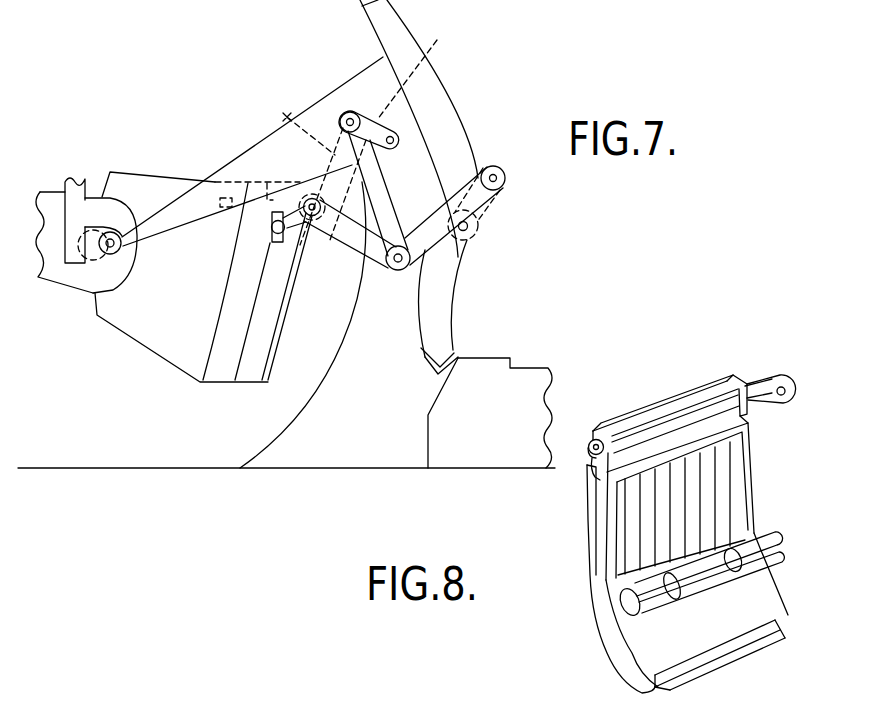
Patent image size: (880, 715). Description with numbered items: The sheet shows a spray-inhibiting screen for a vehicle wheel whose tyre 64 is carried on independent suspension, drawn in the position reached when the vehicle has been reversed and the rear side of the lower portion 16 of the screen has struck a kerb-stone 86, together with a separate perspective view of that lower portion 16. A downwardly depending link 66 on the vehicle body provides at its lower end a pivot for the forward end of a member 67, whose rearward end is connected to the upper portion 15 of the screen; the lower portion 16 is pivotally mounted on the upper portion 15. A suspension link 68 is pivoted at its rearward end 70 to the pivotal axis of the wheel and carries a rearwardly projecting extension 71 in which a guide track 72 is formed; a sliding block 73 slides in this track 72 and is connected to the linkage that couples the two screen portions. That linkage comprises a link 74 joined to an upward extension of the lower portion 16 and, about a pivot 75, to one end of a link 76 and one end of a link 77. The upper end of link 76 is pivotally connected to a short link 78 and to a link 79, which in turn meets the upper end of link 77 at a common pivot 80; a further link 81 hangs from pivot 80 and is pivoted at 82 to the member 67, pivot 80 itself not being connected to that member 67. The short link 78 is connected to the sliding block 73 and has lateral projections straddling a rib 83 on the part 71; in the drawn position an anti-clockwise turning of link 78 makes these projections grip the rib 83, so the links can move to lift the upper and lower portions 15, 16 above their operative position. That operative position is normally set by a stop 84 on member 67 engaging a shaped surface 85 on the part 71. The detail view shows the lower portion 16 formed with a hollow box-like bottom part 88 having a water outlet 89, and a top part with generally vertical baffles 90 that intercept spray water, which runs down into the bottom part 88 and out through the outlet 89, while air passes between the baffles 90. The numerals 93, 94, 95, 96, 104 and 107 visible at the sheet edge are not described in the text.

In FIG. 7, the upper portion of the screen 15 is at (372, 21).
In FIG. 7, the lower portion of the screen 16 is at (430, 340).
In FIG. 8, the lower portion of the screen 16 is at (582, 539).
In FIG. 7, the tyre 64 is at (312, 407).
In FIG. 7, the link 66 is at (77, 200).
In FIG. 7, the member 67 is at (158, 220).
In FIG. 7, the suspension link 68 is at (117, 272).
In FIG. 7, the rearward end of suspension link 70 is at (90, 252).
In FIG. 7, the rearwardly projecting extension 71 is at (163, 347).
In FIG. 7, the guide track 72 is at (253, 363).
In FIG. 7, the sliding block 73 is at (285, 238).
In FIG. 7, the link 74 is at (426, 240).
In FIG. 7, the pivot 75 is at (410, 260).
In FIG. 7, the link 76 is at (363, 247).
In FIG. 7, the link 77 is at (370, 182).
In FIG. 7, the short link 78 is at (292, 228).
In FIG. 7, the link 79 is at (285, 116).
In FIG. 7, the common pivot 80 is at (343, 114).
In FIG. 7, the link 81 is at (425, 66).
In FIG. 7, the pivot 82 is at (394, 140).
In FIG. 7, the laterally projecting rib 83 is at (276, 323).
In FIG. 7, the stop 84 is at (225, 203).
In FIG. 7, the laterally projecting surface 85 is at (212, 378).
In FIG. 7, the kerb-stone 86 is at (515, 398).
In FIG. 8, the bottom part 88 is at (612, 648).
In FIG. 8, the water outlet 89 is at (712, 667).
In FIG. 8, the baffles 90 is at (727, 472).
In FIG. 8, the element 93 is at (462, 714).
In FIG. 8, the element 94 is at (235, 714).
In FIG. 8, the element 95 is at (103, 714).
In FIG. 8, the element 96 is at (172, 714).
In FIG. 8, the element 104 is at (326, 714).
In FIG. 8, the element 107 is at (386, 714).